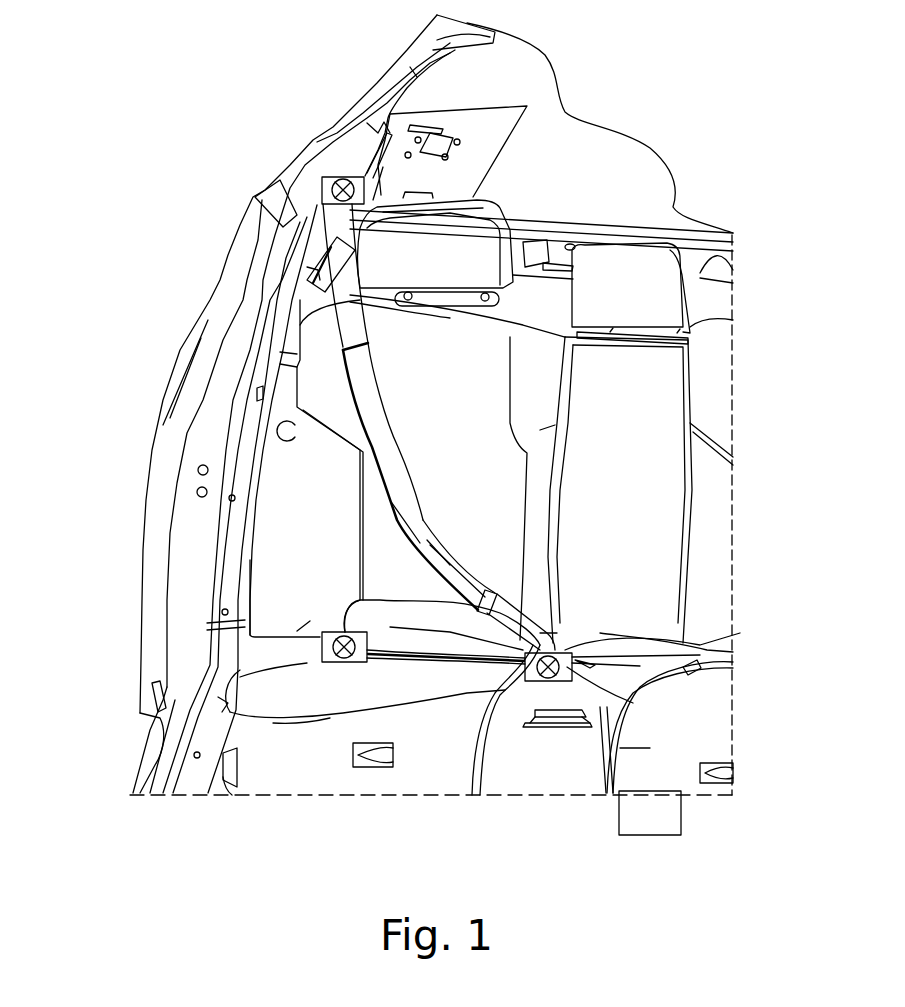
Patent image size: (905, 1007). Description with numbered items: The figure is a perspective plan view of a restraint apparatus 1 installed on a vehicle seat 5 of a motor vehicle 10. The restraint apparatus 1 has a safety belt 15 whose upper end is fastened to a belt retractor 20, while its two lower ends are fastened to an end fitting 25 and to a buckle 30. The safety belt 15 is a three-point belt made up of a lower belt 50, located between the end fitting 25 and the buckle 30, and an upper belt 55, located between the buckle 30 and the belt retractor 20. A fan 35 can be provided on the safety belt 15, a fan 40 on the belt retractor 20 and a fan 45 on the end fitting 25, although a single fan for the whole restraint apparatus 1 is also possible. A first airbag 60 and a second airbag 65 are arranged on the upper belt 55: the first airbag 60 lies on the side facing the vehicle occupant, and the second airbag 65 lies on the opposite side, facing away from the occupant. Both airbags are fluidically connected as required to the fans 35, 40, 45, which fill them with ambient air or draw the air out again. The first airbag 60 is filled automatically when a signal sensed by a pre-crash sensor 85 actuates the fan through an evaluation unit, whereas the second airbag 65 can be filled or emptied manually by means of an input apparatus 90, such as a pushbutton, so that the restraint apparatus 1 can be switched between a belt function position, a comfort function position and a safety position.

The restraint apparatus 1 is at (326, 335).
The vehicle seat 5 is at (287, 540).
The motor vehicle 10 is at (565, 199).
The safety belt 15 is at (410, 442).
The belt retractor 20 is at (323, 190).
The end fitting 25 is at (340, 648).
The buckle 30 is at (650, 648).
The fan 35 is at (333, 177).
The fan 40 is at (350, 663).
The fan 45 is at (633, 730).
The lower belt 50 is at (430, 600).
The upper belt 55 is at (318, 295).
The first airbag 60 is at (425, 522).
The second airbag 65 is at (367, 398).
The pre-crash sensor 85 is at (650, 813).
The input apparatus 90 is at (550, 727).